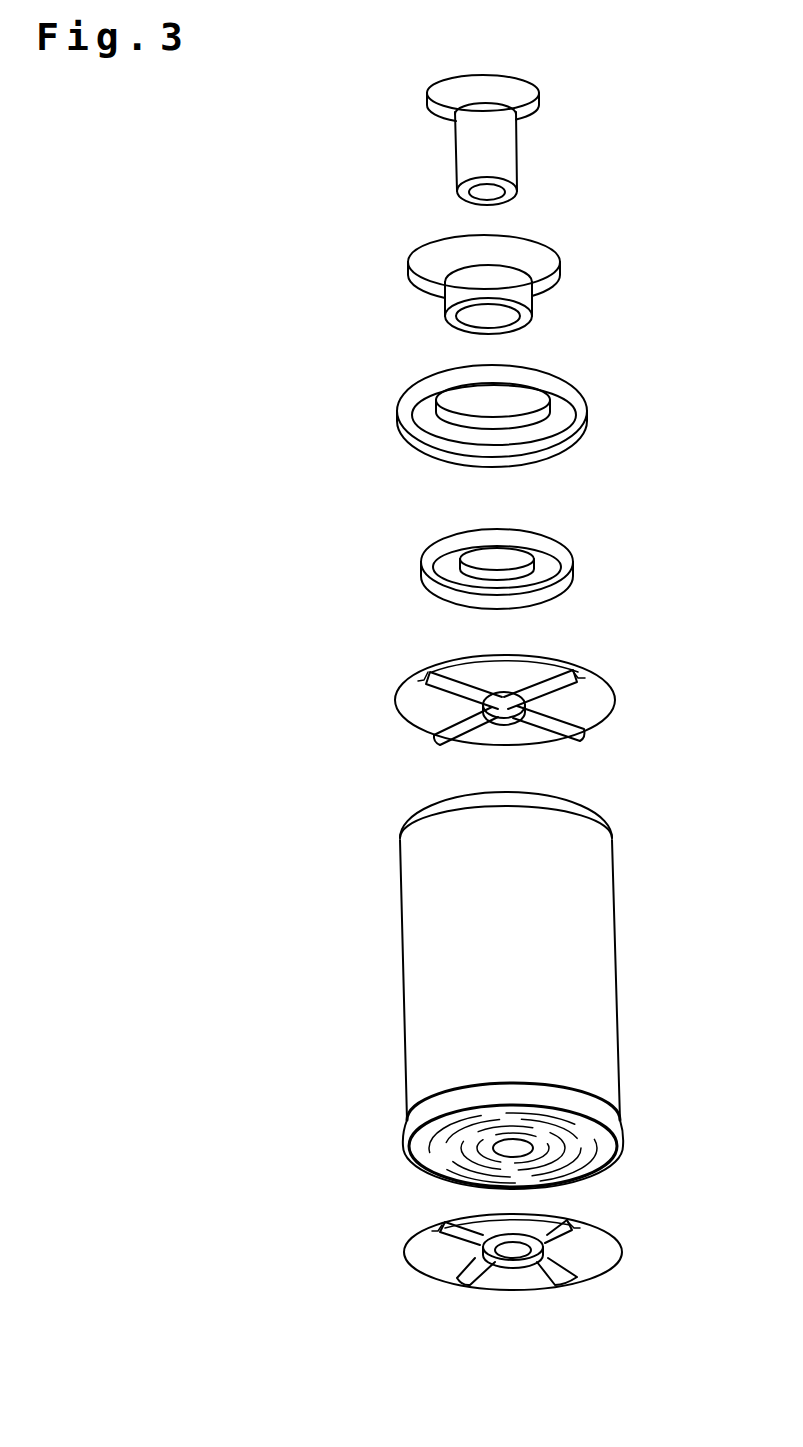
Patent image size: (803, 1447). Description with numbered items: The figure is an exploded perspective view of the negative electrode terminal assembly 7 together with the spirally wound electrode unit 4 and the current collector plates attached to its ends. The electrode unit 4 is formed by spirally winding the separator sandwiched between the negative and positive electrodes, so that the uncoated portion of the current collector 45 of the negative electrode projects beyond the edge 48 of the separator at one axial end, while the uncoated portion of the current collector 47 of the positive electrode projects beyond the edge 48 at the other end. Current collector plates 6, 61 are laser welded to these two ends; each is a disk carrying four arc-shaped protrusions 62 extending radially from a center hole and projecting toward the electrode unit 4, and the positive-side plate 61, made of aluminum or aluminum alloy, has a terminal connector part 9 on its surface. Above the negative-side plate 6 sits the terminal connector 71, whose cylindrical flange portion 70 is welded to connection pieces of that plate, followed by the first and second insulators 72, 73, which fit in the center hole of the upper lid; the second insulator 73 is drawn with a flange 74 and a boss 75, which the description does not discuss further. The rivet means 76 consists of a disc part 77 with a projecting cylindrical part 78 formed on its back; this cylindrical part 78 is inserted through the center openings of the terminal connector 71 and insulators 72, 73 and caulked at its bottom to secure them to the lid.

The negative electrode terminal assembly 7 is at (322, 270).
The rivet means 76 is at (552, 138).
The disc part 77 is at (536, 93).
The cylindrical part 78 is at (502, 168).
The second insulator 73 is at (551, 280).
The insulator flange 74 is at (558, 262).
The insulator boss 75 is at (523, 297).
The first insulator 72 is at (580, 386).
The terminal connector 71 is at (553, 540).
The cylindrical flange portion 70 is at (526, 545).
The current collector plate 6 is at (607, 678).
The arc-shaped protrusions 62 is at (427, 678).
The edge of separator 48 is at (590, 800).
The current collector of the negative electrode 45 is at (575, 811).
The spirally wound electrode unit 4 is at (545, 978).
The current collector of the positive electrode 47 is at (608, 1122).
The current collector plate 61 is at (547, 1279).
The terminal connector part 9 is at (513, 1263).